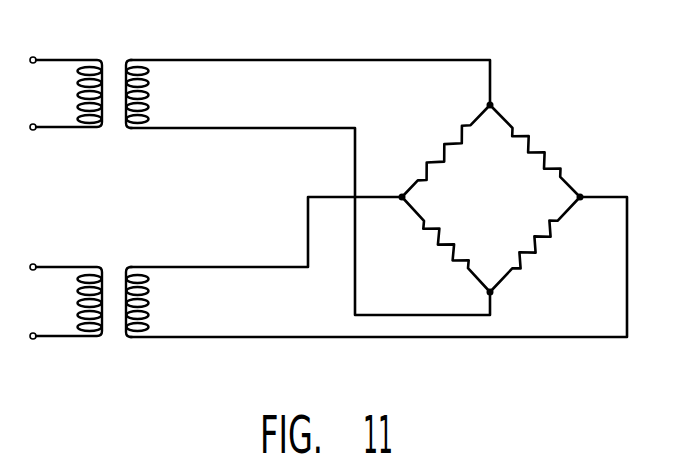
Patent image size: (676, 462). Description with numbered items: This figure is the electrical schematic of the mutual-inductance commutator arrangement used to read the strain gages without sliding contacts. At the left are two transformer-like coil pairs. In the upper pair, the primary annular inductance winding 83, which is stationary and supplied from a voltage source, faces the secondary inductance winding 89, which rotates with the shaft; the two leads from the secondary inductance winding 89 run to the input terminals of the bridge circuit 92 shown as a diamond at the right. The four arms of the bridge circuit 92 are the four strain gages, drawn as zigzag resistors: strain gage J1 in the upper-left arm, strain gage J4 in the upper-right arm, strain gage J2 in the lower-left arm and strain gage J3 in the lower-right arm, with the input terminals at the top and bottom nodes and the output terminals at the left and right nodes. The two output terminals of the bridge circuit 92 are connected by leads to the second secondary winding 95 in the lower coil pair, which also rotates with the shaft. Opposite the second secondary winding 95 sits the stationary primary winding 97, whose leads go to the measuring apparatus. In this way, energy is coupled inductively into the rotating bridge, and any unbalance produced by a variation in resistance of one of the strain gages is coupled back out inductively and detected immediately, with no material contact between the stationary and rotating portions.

The primary annular inductance winding 83 is at (84, 80).
The secondary inductance winding 89 is at (147, 79).
The primary winding 97 is at (84, 289).
The second secondary winding 95 is at (146, 288).
The bridge circuit 92 is at (490, 182).
The strain gage J1 is at (437, 152).
The strain gage J2 is at (442, 251).
The strain gage J3 is at (545, 247).
The strain gage J4 is at (558, 165).